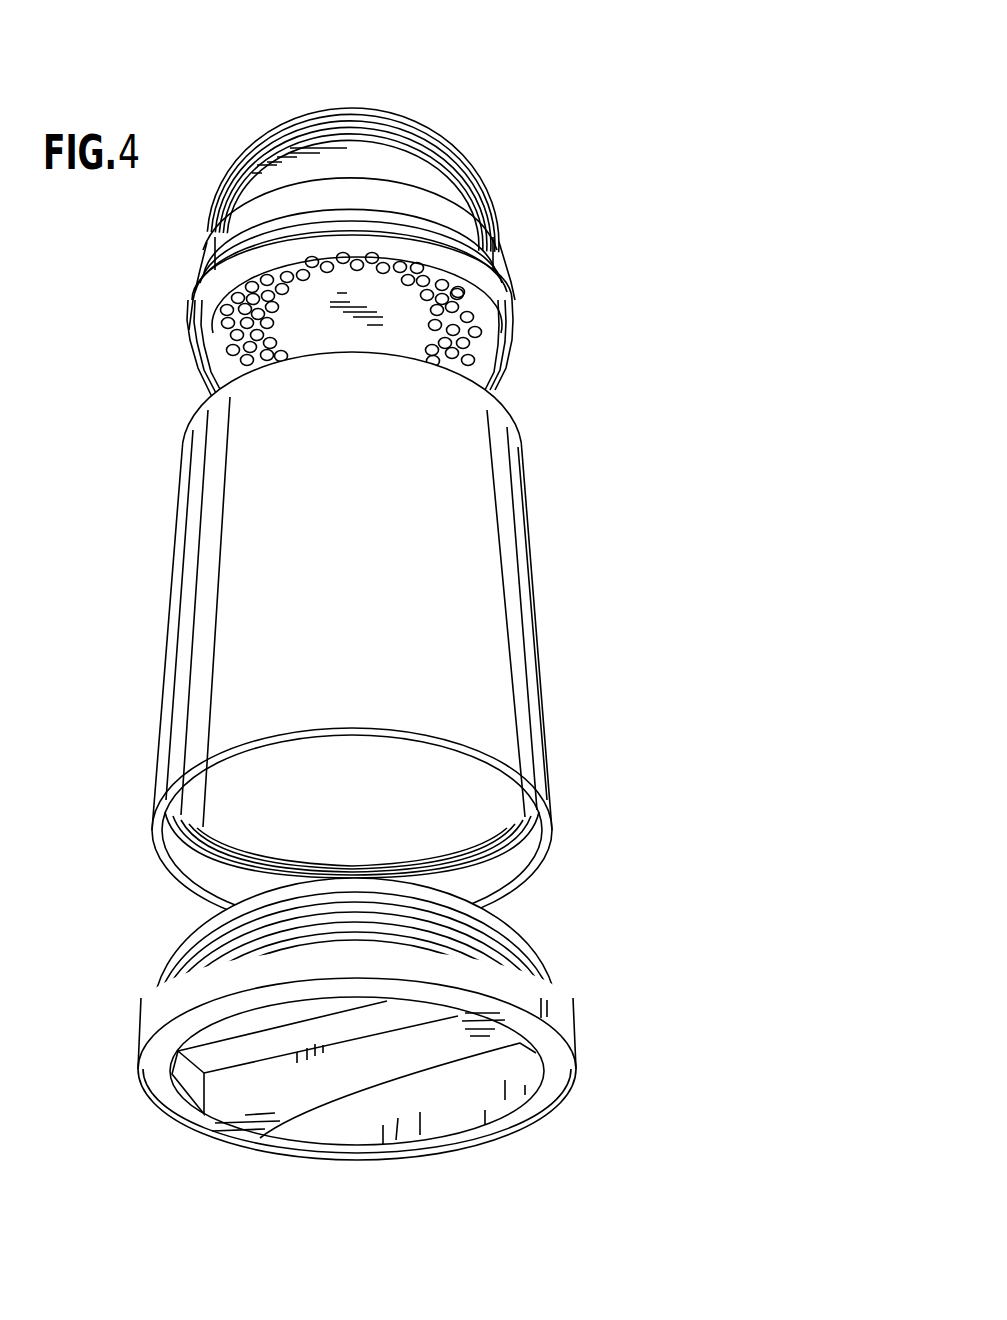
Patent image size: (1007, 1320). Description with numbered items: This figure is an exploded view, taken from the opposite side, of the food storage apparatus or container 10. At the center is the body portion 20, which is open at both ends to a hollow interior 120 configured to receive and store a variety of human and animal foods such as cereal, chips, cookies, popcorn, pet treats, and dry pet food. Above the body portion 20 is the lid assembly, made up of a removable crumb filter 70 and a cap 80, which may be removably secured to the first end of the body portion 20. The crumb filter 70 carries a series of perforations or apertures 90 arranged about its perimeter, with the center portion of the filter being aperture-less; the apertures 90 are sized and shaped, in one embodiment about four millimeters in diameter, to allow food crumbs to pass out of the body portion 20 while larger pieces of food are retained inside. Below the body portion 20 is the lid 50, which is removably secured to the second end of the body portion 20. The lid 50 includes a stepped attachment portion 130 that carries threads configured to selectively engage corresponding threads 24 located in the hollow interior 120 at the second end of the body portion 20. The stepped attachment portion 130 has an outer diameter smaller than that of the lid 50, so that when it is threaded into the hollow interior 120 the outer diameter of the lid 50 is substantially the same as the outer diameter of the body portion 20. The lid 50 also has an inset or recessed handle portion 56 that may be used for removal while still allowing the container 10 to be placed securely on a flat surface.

The food storage apparatus/container 10 is at (636, 104).
The body portion 20 is at (472, 604).
The threads 24 is at (178, 874).
The lid 50 is at (552, 1010).
The handle portion 56 is at (294, 1100).
The crumb filter 70 is at (496, 258).
The cap 80 is at (481, 173).
The perforations or apertures 90 is at (468, 352).
The hollow interior 120 is at (363, 796).
The stepped attachment portion 130 is at (548, 968).